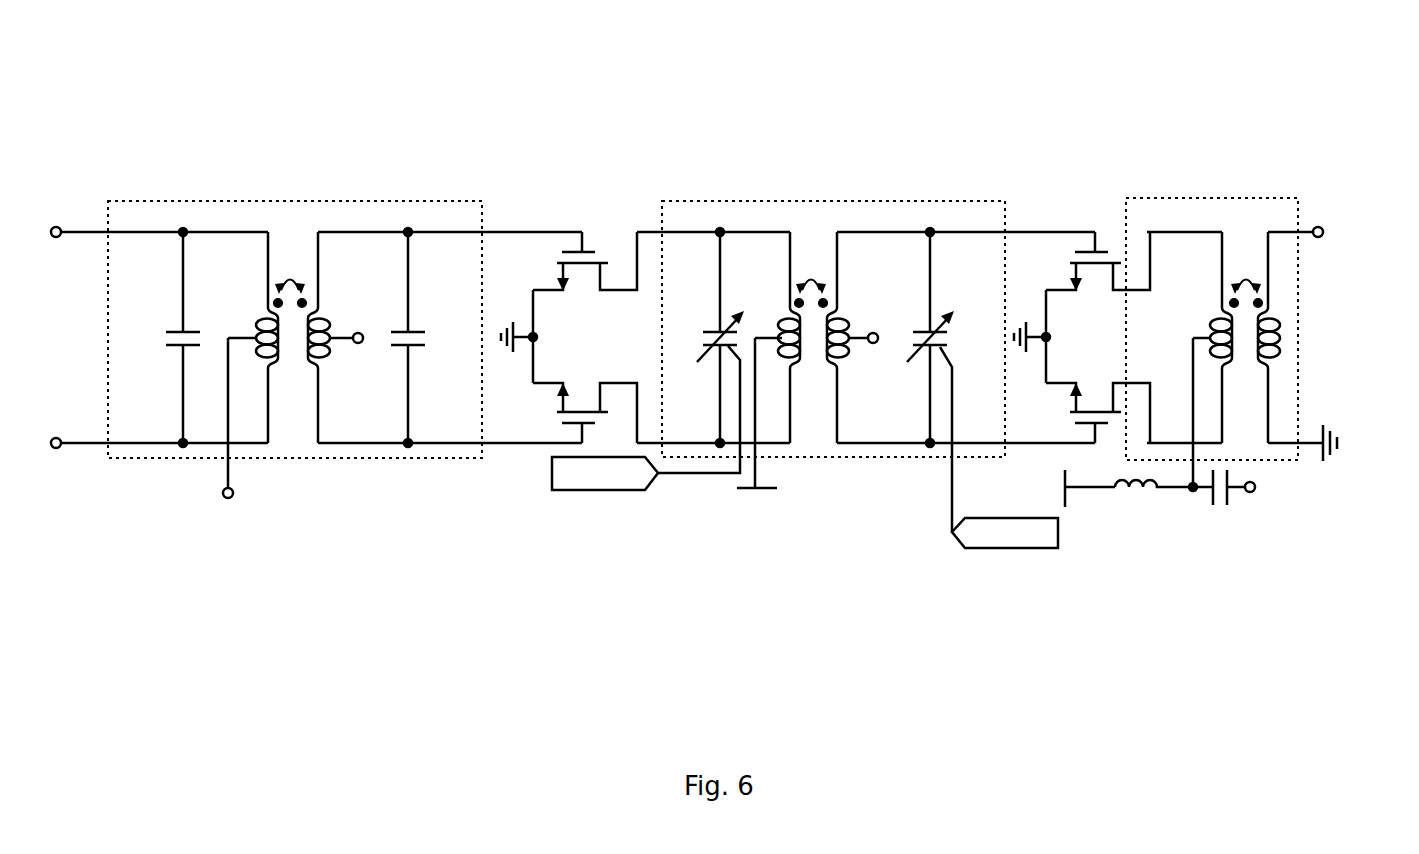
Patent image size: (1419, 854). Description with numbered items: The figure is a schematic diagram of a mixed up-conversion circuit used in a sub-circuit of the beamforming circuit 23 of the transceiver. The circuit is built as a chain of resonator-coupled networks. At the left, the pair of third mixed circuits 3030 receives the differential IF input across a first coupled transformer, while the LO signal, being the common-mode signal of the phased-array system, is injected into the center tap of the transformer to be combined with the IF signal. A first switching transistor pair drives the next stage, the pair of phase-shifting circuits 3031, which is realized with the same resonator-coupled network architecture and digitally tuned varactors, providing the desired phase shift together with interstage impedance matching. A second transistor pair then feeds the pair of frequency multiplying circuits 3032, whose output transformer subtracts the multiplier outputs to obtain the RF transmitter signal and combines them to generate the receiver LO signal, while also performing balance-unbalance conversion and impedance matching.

The beamforming circuit 23 is at (102, 122).
The pair of third mixed circuits 3030 is at (362, 460).
The pair of phase-shifting circuits 3031 is at (860, 458).
The pair of frequency multiplying circuits 3032 is at (1208, 195).